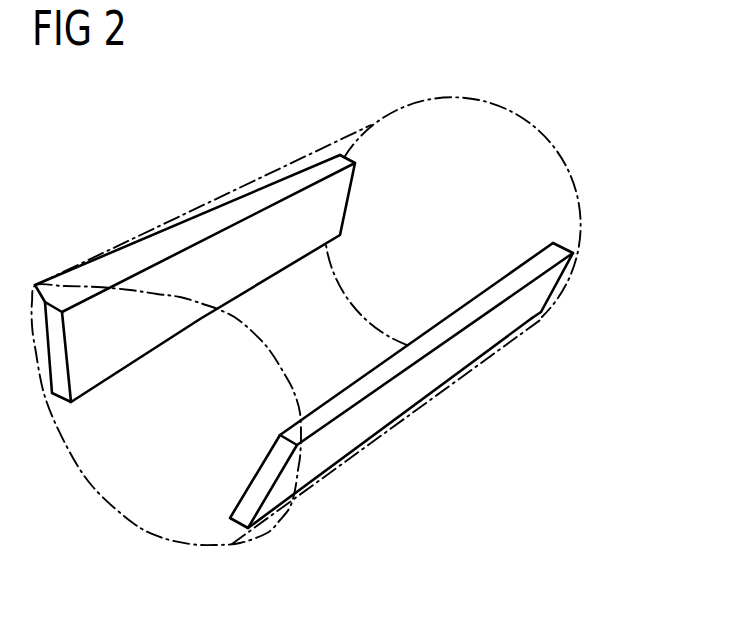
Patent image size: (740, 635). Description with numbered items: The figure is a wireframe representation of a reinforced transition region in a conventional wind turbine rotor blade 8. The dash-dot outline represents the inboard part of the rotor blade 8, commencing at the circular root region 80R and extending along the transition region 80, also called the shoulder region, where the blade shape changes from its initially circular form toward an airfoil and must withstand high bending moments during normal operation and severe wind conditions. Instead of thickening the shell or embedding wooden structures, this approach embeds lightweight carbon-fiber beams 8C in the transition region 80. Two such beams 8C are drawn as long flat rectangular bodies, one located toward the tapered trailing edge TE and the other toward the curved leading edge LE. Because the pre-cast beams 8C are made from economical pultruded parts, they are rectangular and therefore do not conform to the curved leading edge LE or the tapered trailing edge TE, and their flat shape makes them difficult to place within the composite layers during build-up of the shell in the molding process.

The transition region 80 is at (181, 108).
The circular root region 80R is at (572, 224).
The wind turbine rotor blade 8 is at (37, 284).
The carbon-fiber beam 8C is at (86, 381).
The trailing edge TE is at (125, 193).
The leading edge LE is at (388, 488).